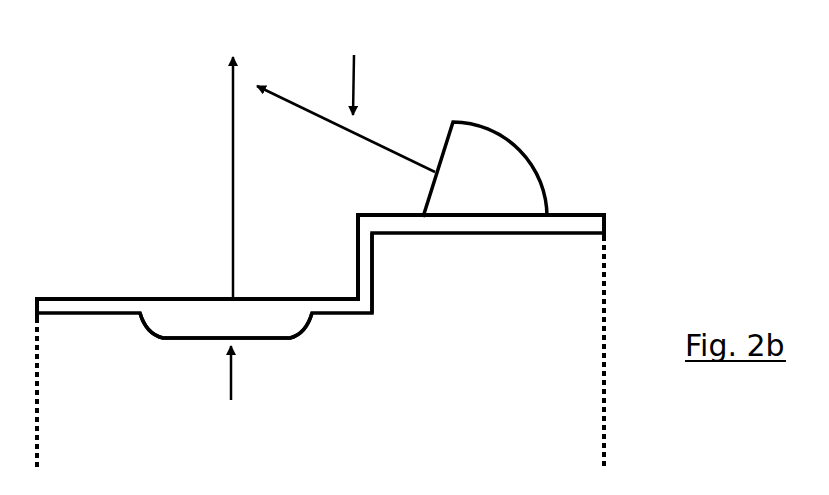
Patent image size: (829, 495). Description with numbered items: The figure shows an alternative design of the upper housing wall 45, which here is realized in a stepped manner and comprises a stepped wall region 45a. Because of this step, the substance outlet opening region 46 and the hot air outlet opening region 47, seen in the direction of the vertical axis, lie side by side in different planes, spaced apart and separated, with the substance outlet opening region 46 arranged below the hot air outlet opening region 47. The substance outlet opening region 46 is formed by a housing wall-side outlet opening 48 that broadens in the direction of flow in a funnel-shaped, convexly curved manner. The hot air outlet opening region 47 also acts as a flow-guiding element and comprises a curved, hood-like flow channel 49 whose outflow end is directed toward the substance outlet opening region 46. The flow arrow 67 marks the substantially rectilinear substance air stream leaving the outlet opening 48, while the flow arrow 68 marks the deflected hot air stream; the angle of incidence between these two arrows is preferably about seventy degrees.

The upper housing wall 45 is at (61, 291).
The stepped wall region 45a is at (381, 292).
The substance outlet opening region 46 is at (148, 357).
The hot air outlet opening region 47 is at (503, 139).
The outlet opening 48 is at (230, 394).
The flow channel 49 is at (461, 193).
The flow arrow 67 is at (223, 157).
The flow arrow 68 is at (355, 65).